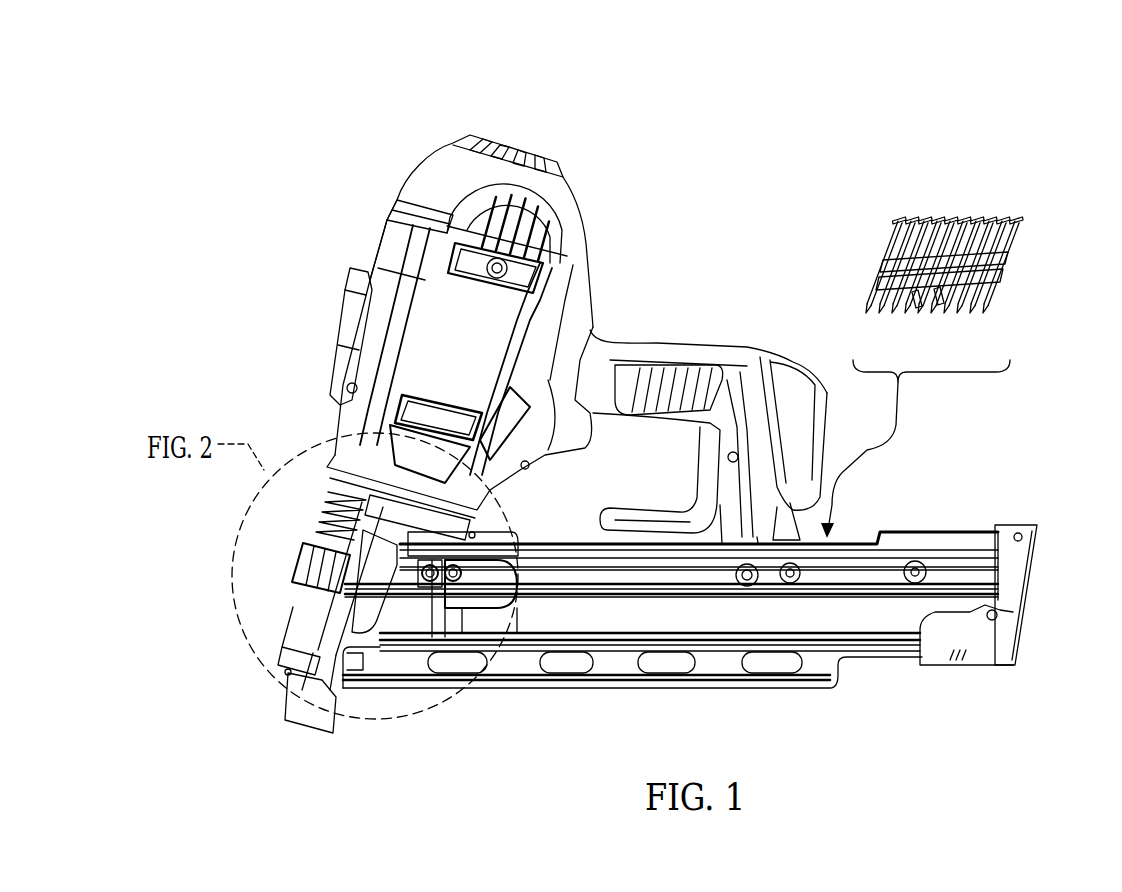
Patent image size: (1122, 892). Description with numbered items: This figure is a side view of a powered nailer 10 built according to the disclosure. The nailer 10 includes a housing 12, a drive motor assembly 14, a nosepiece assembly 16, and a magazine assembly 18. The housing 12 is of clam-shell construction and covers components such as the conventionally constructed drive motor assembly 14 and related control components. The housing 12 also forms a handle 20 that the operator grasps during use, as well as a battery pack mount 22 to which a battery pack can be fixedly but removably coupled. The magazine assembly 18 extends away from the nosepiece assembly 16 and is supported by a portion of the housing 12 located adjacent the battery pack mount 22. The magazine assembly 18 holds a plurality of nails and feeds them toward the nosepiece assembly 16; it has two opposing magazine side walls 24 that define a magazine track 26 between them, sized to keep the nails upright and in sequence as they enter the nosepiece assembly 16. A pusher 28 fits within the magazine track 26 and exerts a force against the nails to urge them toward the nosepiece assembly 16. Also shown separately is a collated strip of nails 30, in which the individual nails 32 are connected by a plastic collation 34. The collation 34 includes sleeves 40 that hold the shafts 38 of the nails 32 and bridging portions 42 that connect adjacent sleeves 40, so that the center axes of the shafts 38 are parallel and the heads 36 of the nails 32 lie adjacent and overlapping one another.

The powered nailer 10 is at (265, 100).
The housing 12 is at (562, 192).
The drive motor assembly 14 is at (457, 330).
The nosepiece assembly 16 is at (302, 572).
The magazine assembly 18 is at (968, 532).
The handle 20 is at (607, 353).
The battery pack mount 22 is at (829, 392).
The magazine side walls 24 is at (858, 577).
The magazine track 26 is at (1005, 553).
The pusher 28 is at (973, 640).
The collated strip of nails 30 is at (884, 148).
The nails 32 is at (962, 313).
The collation 34 is at (997, 272).
The heads 36 is at (931, 218).
The shafts 38 is at (995, 245).
The sleeves 40 is at (878, 294).
The bridging portions 42 is at (933, 310).